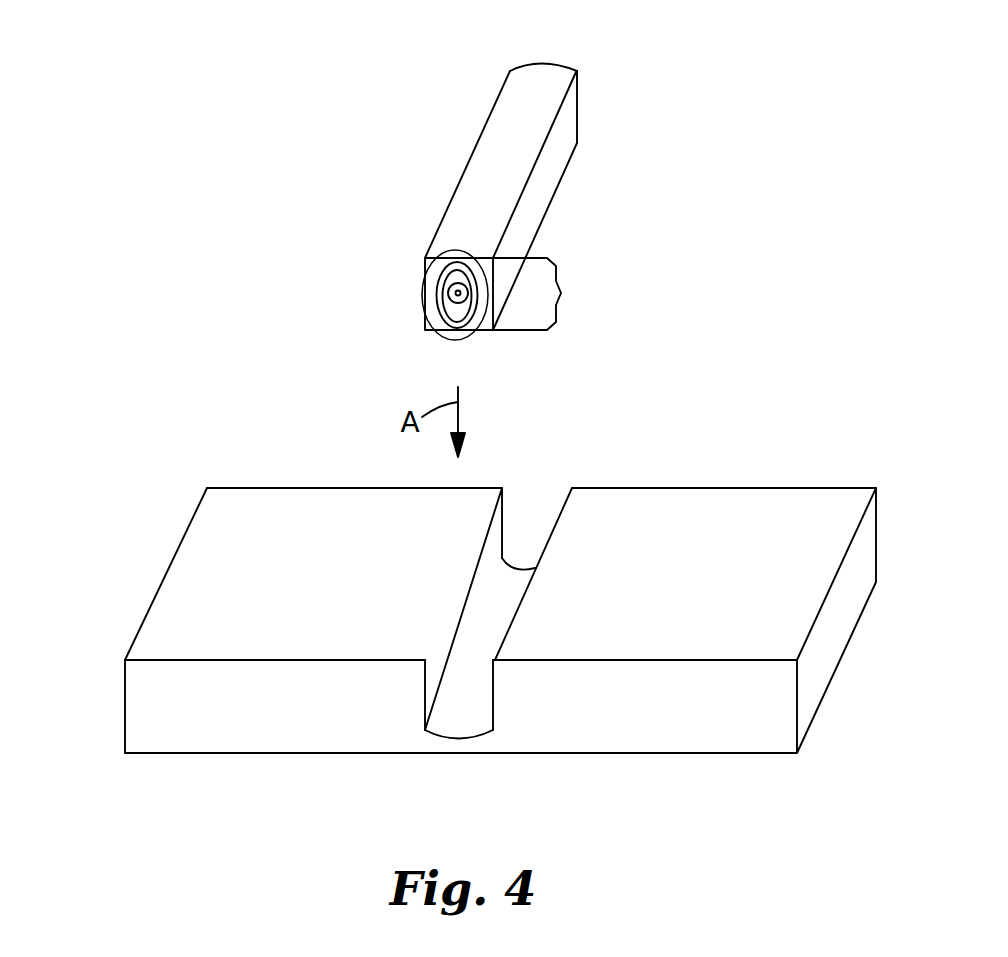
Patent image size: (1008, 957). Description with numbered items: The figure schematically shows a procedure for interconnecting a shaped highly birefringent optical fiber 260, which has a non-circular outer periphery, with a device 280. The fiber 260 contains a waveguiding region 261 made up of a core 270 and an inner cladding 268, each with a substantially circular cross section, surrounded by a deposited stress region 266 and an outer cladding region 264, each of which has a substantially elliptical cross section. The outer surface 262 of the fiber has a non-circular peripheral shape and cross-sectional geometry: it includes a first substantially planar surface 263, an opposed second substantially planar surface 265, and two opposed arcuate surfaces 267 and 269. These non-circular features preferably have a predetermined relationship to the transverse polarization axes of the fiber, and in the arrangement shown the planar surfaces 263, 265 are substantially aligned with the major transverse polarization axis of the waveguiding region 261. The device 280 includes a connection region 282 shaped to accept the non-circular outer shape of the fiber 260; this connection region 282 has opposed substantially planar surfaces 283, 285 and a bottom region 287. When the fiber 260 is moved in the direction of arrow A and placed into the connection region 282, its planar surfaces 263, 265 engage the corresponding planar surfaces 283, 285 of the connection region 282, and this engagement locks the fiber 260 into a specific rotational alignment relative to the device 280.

The highly birefringent optical fiber 260 is at (367, 65).
The waveguiding region 261 is at (521, 294).
The outer surface 262 is at (496, 74).
The first substantially planar surface 263 is at (423, 262).
The outer cladding region 264 is at (447, 318).
The second substantially planar surface 265 is at (550, 182).
The deposited stress region 266 is at (452, 280).
The arcuate surface 267 is at (468, 336).
The inner cladding 268 is at (448, 297).
The arcuate surface 269 is at (560, 62).
The core 270 is at (457, 305).
The device 280 is at (180, 512).
The connection region 282 is at (426, 748).
The substantially planar surface 283 is at (434, 661).
The substantially planar surface 285 is at (491, 670).
The bottom region 287 is at (473, 722).